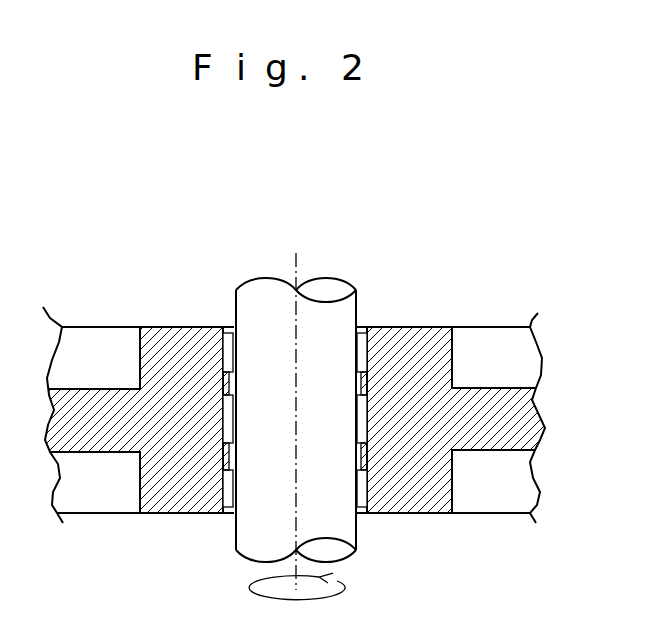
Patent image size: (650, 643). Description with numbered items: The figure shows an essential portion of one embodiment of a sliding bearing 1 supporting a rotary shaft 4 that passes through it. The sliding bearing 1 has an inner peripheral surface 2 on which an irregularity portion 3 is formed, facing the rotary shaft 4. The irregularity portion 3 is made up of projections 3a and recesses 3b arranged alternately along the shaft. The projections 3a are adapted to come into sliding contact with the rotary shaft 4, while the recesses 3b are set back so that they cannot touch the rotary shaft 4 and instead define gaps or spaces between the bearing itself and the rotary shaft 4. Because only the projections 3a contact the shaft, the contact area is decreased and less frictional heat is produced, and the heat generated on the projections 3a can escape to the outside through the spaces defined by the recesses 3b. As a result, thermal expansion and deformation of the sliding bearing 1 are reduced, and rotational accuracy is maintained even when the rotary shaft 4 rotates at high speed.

The sliding bearing 1 is at (391, 268).
The inner peripheral surface 2 is at (231, 327).
The irregularity portion 3 is at (295, 420).
The projections 3a is at (359, 384).
The recesses 3b is at (357, 351).
The rotary shaft 4 is at (259, 298).